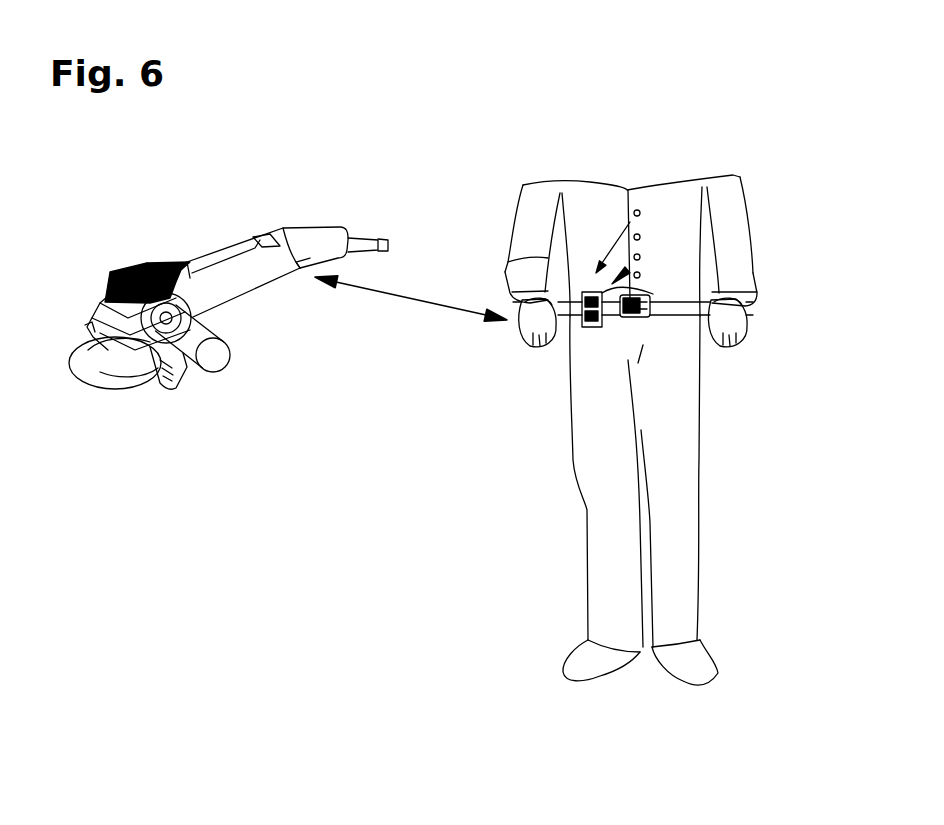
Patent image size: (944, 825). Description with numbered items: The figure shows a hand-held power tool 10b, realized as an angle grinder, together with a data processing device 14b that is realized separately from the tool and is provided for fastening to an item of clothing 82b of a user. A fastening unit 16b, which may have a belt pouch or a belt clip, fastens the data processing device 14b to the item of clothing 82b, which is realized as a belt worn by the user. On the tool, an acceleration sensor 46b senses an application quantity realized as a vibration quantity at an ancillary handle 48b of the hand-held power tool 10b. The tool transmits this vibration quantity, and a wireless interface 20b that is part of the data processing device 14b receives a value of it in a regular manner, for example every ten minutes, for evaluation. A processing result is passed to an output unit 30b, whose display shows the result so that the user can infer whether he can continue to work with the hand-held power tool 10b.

The hand-held power tool 10b is at (237, 243).
The acceleration sensor 46b is at (150, 383).
The ancillary handle 48b is at (198, 330).
The item of clothing 82b is at (573, 260).
The data processing device 14b is at (633, 222).
The fastening unit 16b is at (633, 270).
The wireless interface 20b is at (595, 327).
The output unit 30b is at (653, 294).